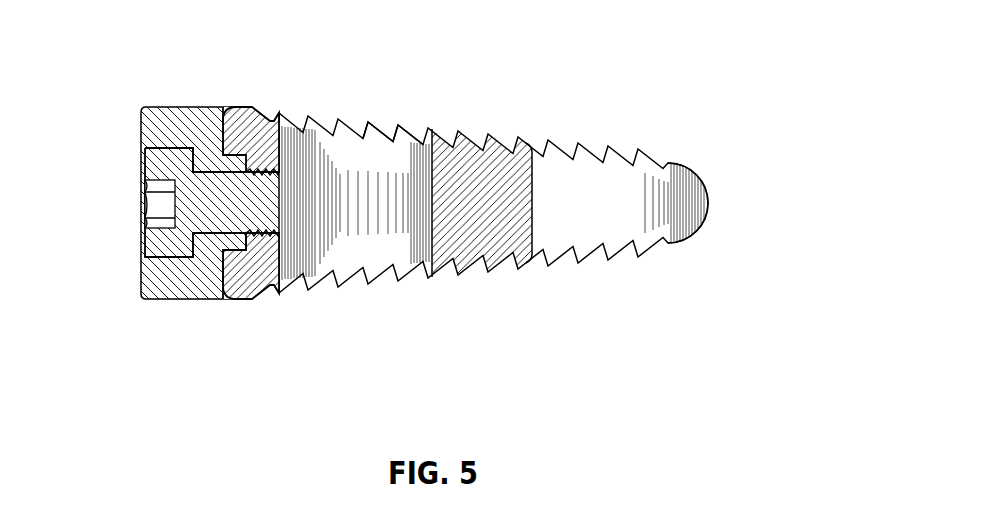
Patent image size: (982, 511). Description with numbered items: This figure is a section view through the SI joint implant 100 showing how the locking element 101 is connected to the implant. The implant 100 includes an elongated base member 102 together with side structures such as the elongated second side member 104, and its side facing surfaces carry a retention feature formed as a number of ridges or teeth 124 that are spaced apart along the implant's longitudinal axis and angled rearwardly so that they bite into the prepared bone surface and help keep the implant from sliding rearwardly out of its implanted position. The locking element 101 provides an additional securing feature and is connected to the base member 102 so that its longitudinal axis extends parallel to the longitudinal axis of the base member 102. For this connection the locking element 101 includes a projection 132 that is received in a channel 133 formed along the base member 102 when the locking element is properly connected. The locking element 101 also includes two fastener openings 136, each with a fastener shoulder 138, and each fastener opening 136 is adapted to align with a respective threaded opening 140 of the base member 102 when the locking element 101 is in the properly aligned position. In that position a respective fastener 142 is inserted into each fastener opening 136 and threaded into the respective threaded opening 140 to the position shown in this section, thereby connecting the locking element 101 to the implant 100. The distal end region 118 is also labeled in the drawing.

The SI joint implant 100 is at (612, 132).
The locking element 101 is at (140, 92).
The base member 102 is at (249, 110).
The second side member 104 is at (470, 175).
The distal tip 118 is at (716, 201).
The ridges or teeth 124 is at (398, 126).
The projection 132 is at (237, 292).
The channel 133 is at (251, 255).
The fastener opening 136 is at (141, 138).
The fastener shoulder 138 is at (193, 150).
The threaded opening 140 is at (263, 168).
The fastener 142 is at (150, 239).